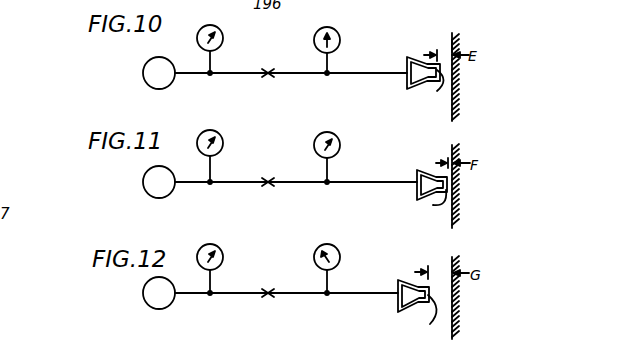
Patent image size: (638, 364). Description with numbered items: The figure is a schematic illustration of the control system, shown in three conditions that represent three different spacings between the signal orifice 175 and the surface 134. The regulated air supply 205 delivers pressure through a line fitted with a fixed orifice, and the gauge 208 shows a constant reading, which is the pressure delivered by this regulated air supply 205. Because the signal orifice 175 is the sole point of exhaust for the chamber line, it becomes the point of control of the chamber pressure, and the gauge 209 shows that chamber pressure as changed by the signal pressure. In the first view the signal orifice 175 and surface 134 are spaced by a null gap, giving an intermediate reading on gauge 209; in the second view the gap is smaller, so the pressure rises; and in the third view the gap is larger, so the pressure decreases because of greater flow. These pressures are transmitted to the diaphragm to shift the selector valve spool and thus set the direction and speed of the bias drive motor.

In FIG. 10, the regulated air supply 205 is at (138, 75).
In FIG. 11, the regulated air supply 205 is at (138, 190).
In FIG. 12, the regulated air supply 205 is at (144, 309).
In FIG. 10, the gauge 208 is at (223, 36).
In FIG. 11, the gauge 208 is at (222, 139).
In FIG. 12, the gauge 208 is at (222, 252).
In FIG. 10, the gauge 209 is at (340, 38).
In FIG. 11, the gauge 209 is at (340, 143).
In FIG. 12, the gauge 209 is at (340, 255).
In FIG. 10, the signal orifice 175 is at (424, 80).
In FIG. 11, the signal orifice 175 is at (423, 192).
In FIG. 12, the signal orifice 175 is at (417, 301).
In FIG. 10, the surface 134 is at (452, 46).